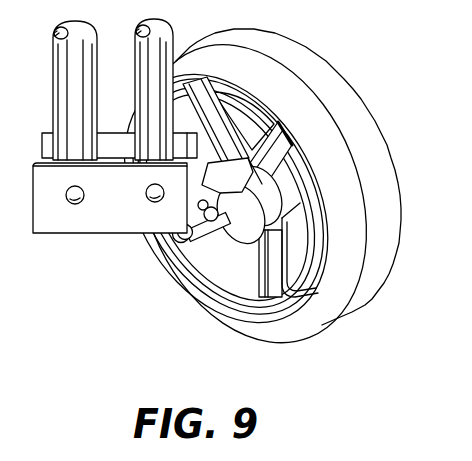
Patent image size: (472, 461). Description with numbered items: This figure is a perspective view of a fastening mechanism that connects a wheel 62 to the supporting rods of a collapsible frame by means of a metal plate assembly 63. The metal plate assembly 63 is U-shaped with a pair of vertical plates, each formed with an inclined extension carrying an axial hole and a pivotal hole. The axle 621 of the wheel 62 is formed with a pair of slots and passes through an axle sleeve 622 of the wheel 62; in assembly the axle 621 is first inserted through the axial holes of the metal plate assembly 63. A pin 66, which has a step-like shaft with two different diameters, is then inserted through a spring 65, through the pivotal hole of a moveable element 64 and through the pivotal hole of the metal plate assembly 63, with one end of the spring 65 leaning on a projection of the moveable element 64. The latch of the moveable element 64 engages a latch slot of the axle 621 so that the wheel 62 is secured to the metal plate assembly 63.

The wheel 62 is at (251, 197).
The axle 621 is at (212, 242).
The axle sleeve 622 is at (298, 298).
The metal plate assembly 63 is at (125, 217).
The moveable element 64 is at (218, 172).
The spring 65 is at (196, 240).
The pin 66 is at (182, 238).